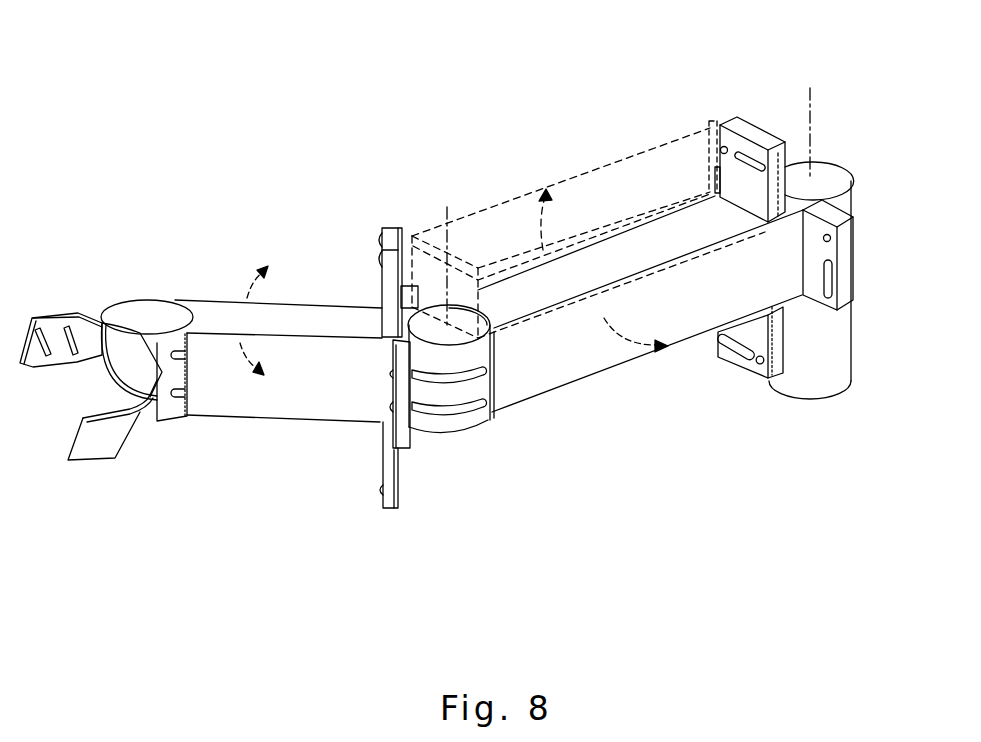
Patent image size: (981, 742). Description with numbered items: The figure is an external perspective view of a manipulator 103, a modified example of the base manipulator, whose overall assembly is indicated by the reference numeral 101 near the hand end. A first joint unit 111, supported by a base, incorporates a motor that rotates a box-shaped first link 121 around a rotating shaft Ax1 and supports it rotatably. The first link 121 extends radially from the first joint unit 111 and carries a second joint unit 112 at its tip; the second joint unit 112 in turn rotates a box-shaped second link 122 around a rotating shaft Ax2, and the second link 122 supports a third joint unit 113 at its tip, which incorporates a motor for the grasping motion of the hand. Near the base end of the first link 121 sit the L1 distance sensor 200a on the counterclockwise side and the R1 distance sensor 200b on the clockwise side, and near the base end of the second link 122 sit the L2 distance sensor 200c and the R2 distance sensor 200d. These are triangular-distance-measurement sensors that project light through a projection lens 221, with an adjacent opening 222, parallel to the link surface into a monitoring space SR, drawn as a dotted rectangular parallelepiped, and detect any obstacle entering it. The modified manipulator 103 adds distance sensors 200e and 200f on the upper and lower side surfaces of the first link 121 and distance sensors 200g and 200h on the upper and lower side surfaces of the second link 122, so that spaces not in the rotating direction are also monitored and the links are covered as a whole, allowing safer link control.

The manipulator 103 is at (125, 28).
The gripper / end effector 101 is at (62, 497).
The third joint unit 113 is at (150, 310).
The second link 122 is at (308, 315).
The distance sensor 200g is at (388, 228).
The R2 distance sensor 200d is at (420, 284).
The L2 distance sensor 200c is at (410, 452).
The distance sensor 200h is at (388, 508).
The second joint unit 112 is at (473, 423).
The rotating shaft Ax2 is at (452, 216).
The first link 121 is at (608, 370).
The monitoring space SR is at (587, 162).
The R1 distance sensor 200b is at (710, 178).
The distance sensor 200e is at (735, 123).
The first joint unit 111 is at (837, 175).
The rotating shaft Ax1 is at (814, 103).
The L1 distance sensor 200a is at (843, 215).
The projection lens 221 is at (831, 238).
The slot 222 is at (830, 283).
The distance sensor 200f is at (753, 372).